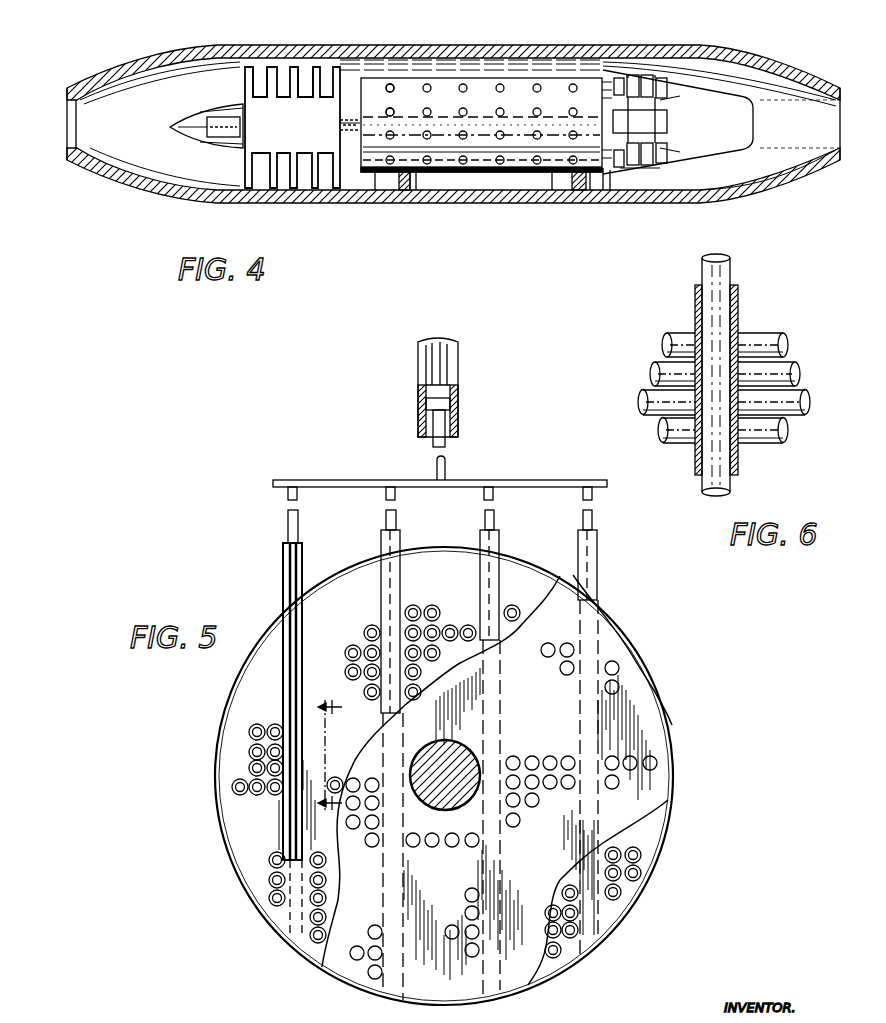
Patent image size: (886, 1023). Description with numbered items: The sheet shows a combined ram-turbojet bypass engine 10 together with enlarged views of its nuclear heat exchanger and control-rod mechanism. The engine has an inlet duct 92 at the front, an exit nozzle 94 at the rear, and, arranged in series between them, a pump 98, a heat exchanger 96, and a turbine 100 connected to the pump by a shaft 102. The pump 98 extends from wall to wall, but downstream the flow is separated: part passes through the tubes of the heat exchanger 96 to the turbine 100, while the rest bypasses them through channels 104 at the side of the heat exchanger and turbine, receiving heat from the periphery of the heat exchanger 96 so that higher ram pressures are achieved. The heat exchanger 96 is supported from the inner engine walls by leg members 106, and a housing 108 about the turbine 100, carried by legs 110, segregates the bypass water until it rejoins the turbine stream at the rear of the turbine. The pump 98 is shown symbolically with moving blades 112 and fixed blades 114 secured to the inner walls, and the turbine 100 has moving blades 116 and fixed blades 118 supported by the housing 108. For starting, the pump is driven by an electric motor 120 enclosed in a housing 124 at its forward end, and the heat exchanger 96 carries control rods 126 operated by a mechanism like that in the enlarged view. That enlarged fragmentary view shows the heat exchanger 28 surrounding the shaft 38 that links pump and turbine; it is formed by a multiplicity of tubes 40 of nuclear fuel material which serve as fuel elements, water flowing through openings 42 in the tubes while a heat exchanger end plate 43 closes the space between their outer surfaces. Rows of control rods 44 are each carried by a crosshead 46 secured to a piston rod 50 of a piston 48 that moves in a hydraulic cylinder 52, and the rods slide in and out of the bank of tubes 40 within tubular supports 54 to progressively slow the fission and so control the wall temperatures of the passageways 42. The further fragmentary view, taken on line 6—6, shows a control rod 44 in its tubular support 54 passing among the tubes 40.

In FIG. 4, the projectile 10 is at (490, 33).
In FIG. 4, the inlet duct 92 is at (150, 172).
In FIG. 4, the exit nozzle 94 is at (836, 134).
In FIG. 4, the heat exchanger 96 is at (486, 110).
In FIG. 4, the pump 98 is at (303, 125).
In FIG. 4, the turbine 100 is at (656, 133).
In FIG. 4, the shaft 102 is at (352, 133).
In FIG. 4, the channels 104 is at (490, 183).
In FIG. 4, the leg members 106 is at (395, 183).
In FIG. 4, the housing 108 is at (730, 122).
In FIG. 4, the legs 110 is at (646, 167).
In FIG. 4, the moving blades 112 is at (269, 75).
In FIG. 4, the fixed blades 114 is at (320, 74).
In FIG. 4, the moving blades 116 is at (636, 76).
In FIG. 4, the fixed blades 118 is at (620, 168).
In FIG. 4, the electric motor 120 is at (216, 132).
In FIG. 4, the housing 124 is at (200, 118).
In FIG. 4, the control rods 126 is at (397, 88).
In FIG. 5, the section line 6— 6 is at (323, 758).
In FIG. 5, the heat exchanger 28 is at (460, 592).
In FIG. 5, the shaft 38 is at (478, 756).
In FIG. 5, the tubes 40 is at (256, 768).
In FIG. 6, the tubes 40 is at (797, 390).
In FIG. 5, the openings 42 is at (618, 686).
In FIG. 5, the heat exchanger end plate 43 is at (562, 637).
In FIG. 5, the control rods 44 is at (485, 494).
In FIG. 6, the control rods 44 is at (722, 283).
In FIG. 5, the crosshead 46 is at (552, 480).
In FIG. 5, the piston 48 is at (458, 408).
In FIG. 5, the piston rod 50 is at (446, 472).
In FIG. 5, the hydraulic cylinder 52 is at (460, 366).
In FIG. 5, the tubular supports 54 is at (578, 548).
In FIG. 6, the tubular supports 54 is at (738, 307).